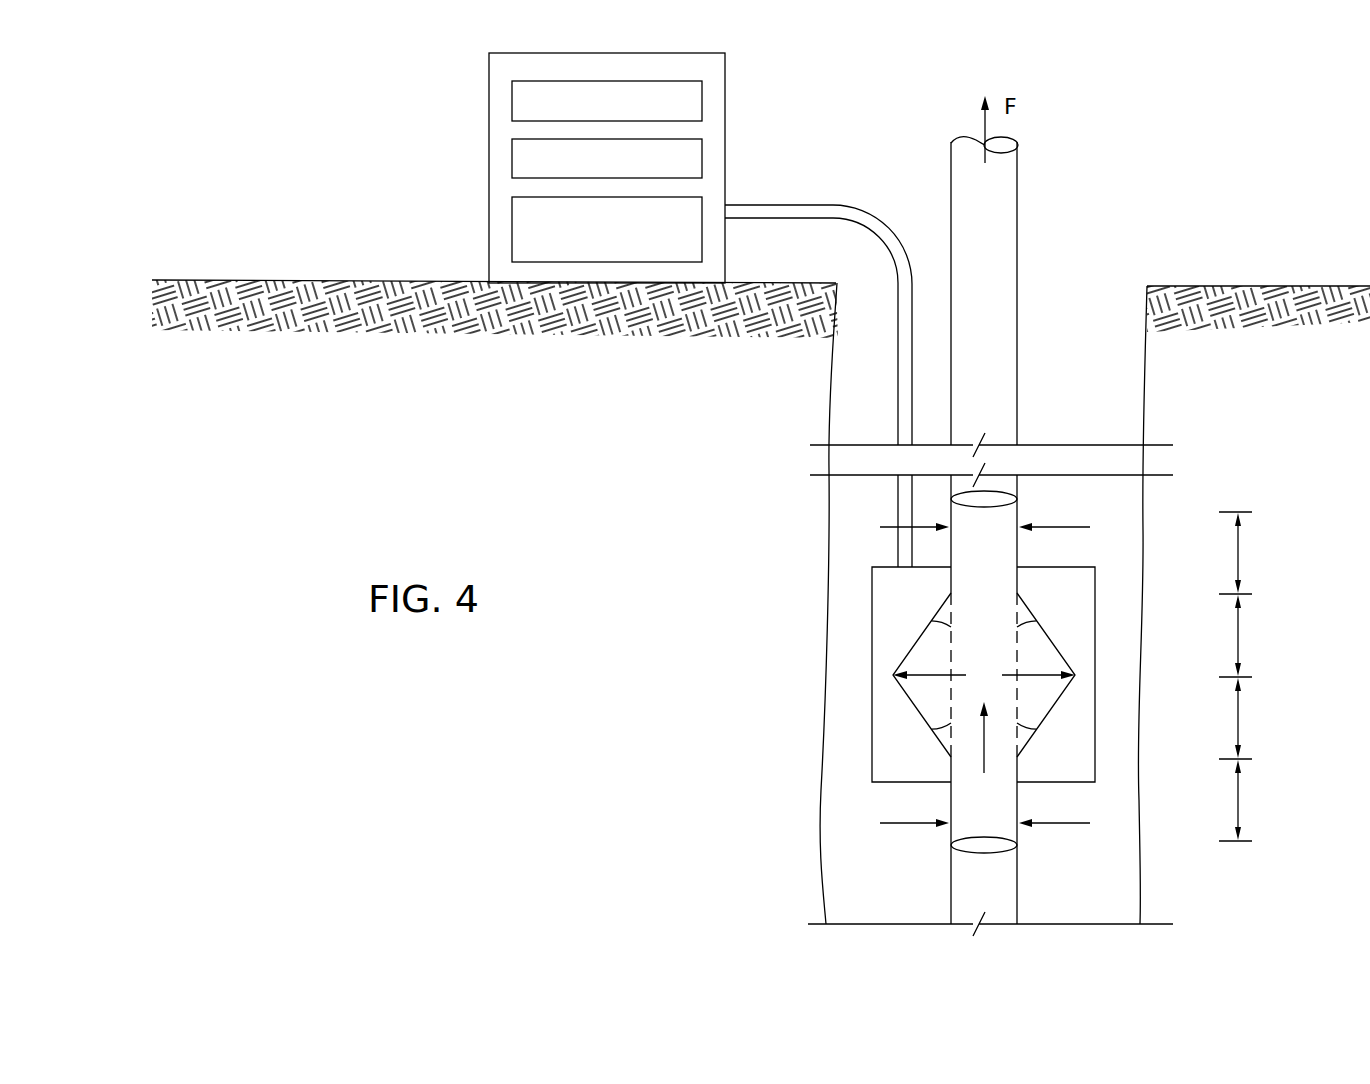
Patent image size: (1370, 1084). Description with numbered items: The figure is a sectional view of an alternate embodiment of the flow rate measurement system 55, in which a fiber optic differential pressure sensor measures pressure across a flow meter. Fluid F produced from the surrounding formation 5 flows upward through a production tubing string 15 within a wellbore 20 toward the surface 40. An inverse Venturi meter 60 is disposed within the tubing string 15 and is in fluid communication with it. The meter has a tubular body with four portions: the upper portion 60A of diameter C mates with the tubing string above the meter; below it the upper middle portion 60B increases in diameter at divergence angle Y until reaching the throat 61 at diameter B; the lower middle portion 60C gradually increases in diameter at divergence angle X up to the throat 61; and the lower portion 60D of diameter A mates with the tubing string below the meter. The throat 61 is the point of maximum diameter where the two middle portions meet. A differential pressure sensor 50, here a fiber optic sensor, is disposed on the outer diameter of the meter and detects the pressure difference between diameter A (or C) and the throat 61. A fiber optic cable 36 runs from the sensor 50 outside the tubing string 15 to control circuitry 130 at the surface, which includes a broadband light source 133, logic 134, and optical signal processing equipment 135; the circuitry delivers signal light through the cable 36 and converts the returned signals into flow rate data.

The formation 5 is at (457, 316).
The production tubing string 15 is at (1018, 172).
The wellbore 20 is at (1150, 386).
The fiber optic cable 36 is at (810, 205).
The surface 40 is at (282, 280).
The differential pressure sensor 50 is at (872, 745).
The flow rate measurement system 55 is at (845, 626).
The inverse Venturi meter 60 is at (1043, 675).
The upper portion 60A is at (1266, 553).
The upper middle portion 60B is at (1266, 635).
The lower middle portion 60C is at (1266, 718).
The lower portion 60D is at (1267, 800).
The throat 61 is at (1075, 675).
The control circuitry 130 is at (489, 57).
The light source 133 is at (512, 154).
The logic 134 is at (512, 97).
The optical signal processing equipment 135 is at (512, 218).